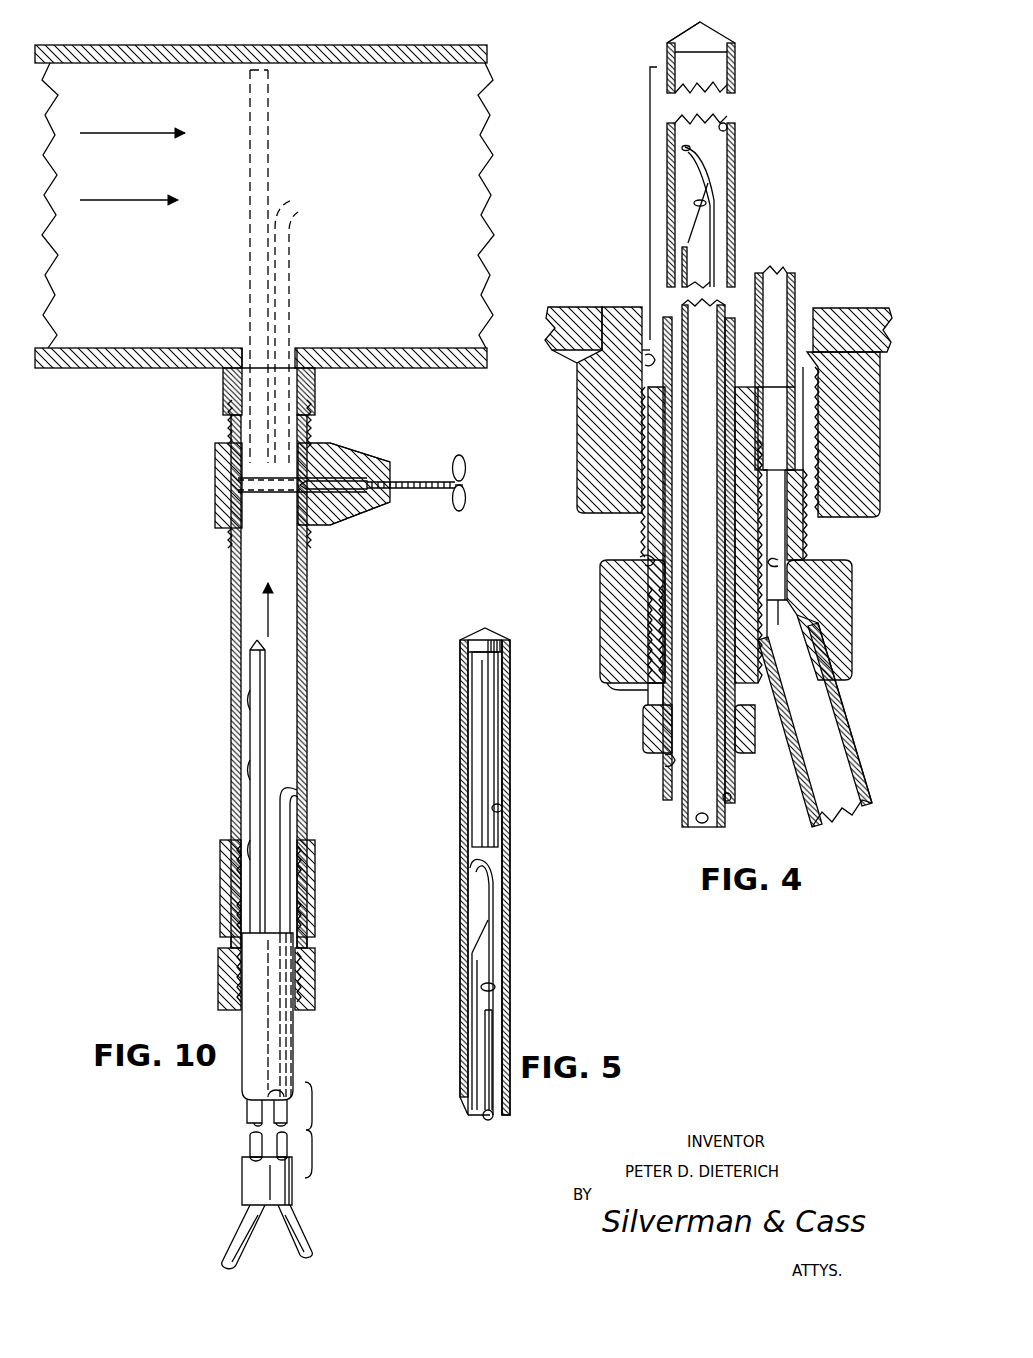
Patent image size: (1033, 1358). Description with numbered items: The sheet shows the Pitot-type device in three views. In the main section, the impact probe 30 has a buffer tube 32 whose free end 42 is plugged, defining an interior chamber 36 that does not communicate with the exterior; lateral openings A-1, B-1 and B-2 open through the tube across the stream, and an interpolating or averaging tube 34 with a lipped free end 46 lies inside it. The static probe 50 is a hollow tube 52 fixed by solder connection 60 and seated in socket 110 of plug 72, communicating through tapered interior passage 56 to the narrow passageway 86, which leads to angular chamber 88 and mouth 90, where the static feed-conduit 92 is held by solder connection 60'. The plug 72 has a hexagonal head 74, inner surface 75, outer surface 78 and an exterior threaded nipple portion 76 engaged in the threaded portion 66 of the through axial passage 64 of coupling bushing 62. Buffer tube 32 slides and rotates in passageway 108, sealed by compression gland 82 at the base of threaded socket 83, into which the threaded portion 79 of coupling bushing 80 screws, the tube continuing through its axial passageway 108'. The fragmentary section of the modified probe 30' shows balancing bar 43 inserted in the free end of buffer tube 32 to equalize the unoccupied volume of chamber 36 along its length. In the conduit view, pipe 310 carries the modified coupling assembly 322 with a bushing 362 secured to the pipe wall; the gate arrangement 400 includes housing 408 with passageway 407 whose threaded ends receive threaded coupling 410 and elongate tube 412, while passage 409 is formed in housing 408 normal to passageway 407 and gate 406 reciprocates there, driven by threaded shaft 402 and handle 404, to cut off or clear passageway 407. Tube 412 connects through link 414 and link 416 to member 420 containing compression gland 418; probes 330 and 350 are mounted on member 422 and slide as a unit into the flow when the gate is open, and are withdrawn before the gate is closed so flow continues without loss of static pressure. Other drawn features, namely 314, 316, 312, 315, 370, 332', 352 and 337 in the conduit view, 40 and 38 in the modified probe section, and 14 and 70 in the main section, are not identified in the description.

In FIG. 10, the pipe 310 is at (264, 204).
In FIG. 10, the free end of buffer tube 42 is at (287, 242).
In FIG. 4, the free end of buffer tube 42 is at (667, 32).
In FIG. 10, the conduit wall 314 is at (365, 48).
In FIG. 10, the conduit interior 316 is at (378, 62).
In FIG. 10, the fluid flow 312 is at (122, 183).
In FIG. 10, the impact probe 330 is at (250, 200).
In FIG. 10, the static probe 350 is at (290, 255).
In FIG. 10, the wall opening 315 is at (292, 350).
In FIG. 10, the nut 370 is at (228, 374).
In FIG. 10, the bushing 362 is at (313, 372).
In FIG. 10, the threaded coupling 410 is at (230, 436).
In FIG. 10, the housing 408 is at (335, 455).
In FIG. 10, the gate 406 is at (365, 475).
In FIG. 10, the handle 404 is at (462, 465).
In FIG. 10, the passageway 407 is at (250, 450).
In FIG. 10, the threaded shaft 402 is at (415, 490).
In FIG. 10, the passage 409 is at (340, 500).
In FIG. 10, the gate arrangement 400 is at (378, 503).
In FIG. 10, the coupling assembly 322 is at (188, 615).
In FIG. 10, the elongate tube 412 is at (308, 608).
In FIG. 10, the link 414 is at (316, 887).
In FIG. 10, the link 416 is at (308, 942).
In FIG. 10, the compression gland 418 is at (316, 984).
In FIG. 10, the gland-containing member 420 is at (316, 1010).
In FIG. 10, the member 422 is at (276, 1040).
In FIG. 10, the sampling tube outlet 332' is at (212, 1237).
In FIG. 10, the return tube inlet 352 is at (300, 1232).
In FIG. 10, the connector 337 is at (268, 1232).
In FIG. 5, the balancing bar 43 is at (483, 668).
In FIG. 5, the lateral opening A-1 is at (462, 697).
In FIG. 5, the lateral opening B-1 is at (462, 790).
In FIG. 5, the lateral opening B-2 is at (462, 1027).
In FIG. 5, the probe 30' is at (523, 871).
In FIG. 5, the interior chamber 36 is at (501, 810).
In FIG. 4, the interior chamber 36 is at (726, 124).
In FIG. 5, the lipped free end 46 is at (478, 862).
In FIG. 4, the lipped free end 46 is at (683, 147).
In FIG. 5, the inner tube 40 is at (488, 876).
In FIG. 4, the inner tube 40 is at (704, 204).
In FIG. 5, the buffer tube 32 is at (507, 942).
In FIG. 4, the buffer tube 32 is at (734, 152).
In FIG. 5, the interpolating tube 34 is at (495, 965).
In FIG. 4, the interpolating tube 34 is at (716, 245).
In FIG. 5, the junction 38 is at (494, 988).
In FIG. 4, the junction 38 is at (708, 822).
In FIG. 4, the impact probe 30 is at (638, 203).
In FIG. 4, the static probe 50 is at (805, 278).
In FIG. 4, the wall 14 is at (572, 305).
In FIG. 4, the through axial passage 64 is at (655, 340).
In FIG. 4, the threaded portion 66 is at (645, 353).
In FIG. 4, the inner surface 75 is at (648, 366).
In FIG. 4, the wall opening 70 is at (572, 360).
In FIG. 4, the coupling bushing 62 is at (585, 462).
In FIG. 4, the hollow tube 52 is at (852, 329).
In FIG. 4, the solder connection 60 is at (843, 433).
In FIG. 4, the socket 110 is at (810, 460).
In FIG. 4, the tapered interior passage 56 is at (780, 500).
In FIG. 4, the exterior threaded nipple portion 76 is at (640, 530).
In FIG. 4, the passageway 108 is at (606, 560).
In FIG. 4, the plug 72 is at (713, 560).
In FIG. 4, the hexagonal head 74 is at (637, 606).
In FIG. 4, the compression gland 82 is at (648, 617).
In FIG. 4, the threaded socket 83 is at (650, 640).
In FIG. 4, the outer surface 78 is at (617, 690).
In FIG. 4, the threaded portion 79 is at (650, 695).
In FIG. 4, the coupling bushing 80 is at (645, 748).
In FIG. 4, the axial passageway 108' is at (643, 777).
In FIG. 4, the passageway 86 is at (855, 568).
In FIG. 4, the angular chamber 88 is at (800, 630).
In FIG. 4, the solder connection 60' is at (844, 652).
In FIG. 4, the mouth 90 is at (830, 690).
In FIG. 4, the static feed-conduit 92 is at (848, 738).